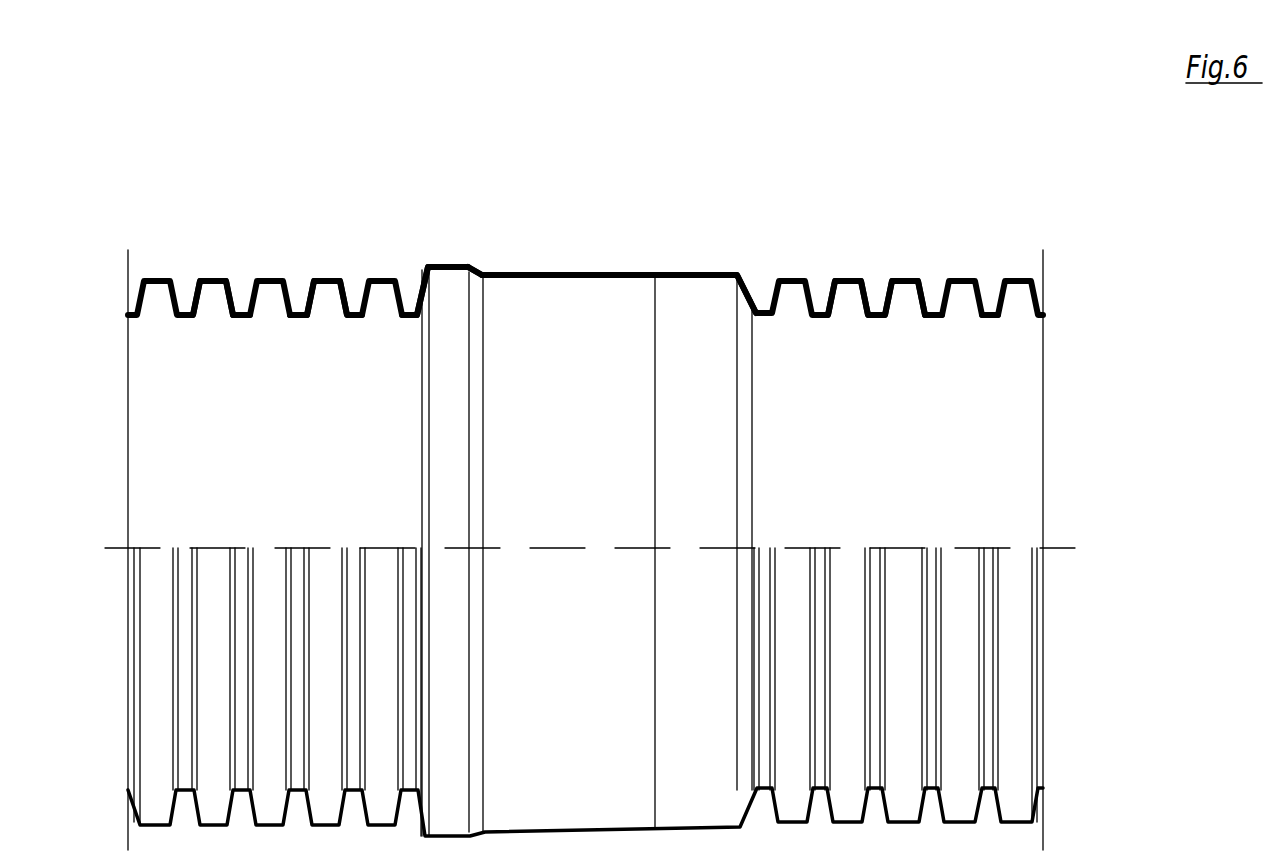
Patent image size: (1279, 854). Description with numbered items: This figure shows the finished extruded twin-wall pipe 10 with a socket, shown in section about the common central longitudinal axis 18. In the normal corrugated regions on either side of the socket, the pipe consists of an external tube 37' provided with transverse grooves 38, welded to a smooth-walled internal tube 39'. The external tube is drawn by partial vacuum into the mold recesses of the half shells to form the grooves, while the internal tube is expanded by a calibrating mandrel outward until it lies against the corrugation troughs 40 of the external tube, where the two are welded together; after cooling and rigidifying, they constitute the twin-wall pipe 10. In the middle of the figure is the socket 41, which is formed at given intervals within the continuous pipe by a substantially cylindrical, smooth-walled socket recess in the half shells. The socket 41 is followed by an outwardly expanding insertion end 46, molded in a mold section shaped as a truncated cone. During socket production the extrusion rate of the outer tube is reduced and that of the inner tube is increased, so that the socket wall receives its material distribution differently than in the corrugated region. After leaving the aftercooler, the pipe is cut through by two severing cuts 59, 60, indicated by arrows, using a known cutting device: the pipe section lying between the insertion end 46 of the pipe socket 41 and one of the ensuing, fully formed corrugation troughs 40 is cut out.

The twin-wall pipe 10 is at (179, 250).
The external tube 37' is at (562, 235).
The smooth-walled internal tube 39' is at (615, 367).
The severing cut 60 is at (296, 240).
The corrugation troughs 40 is at (352, 277).
The severing cut 59 is at (470, 240).
The insertion end 46 is at (478, 270).
The socket 41 is at (595, 255).
The transverse grooves 38 is at (847, 276).
The central longitudinal axis 18 is at (1063, 546).